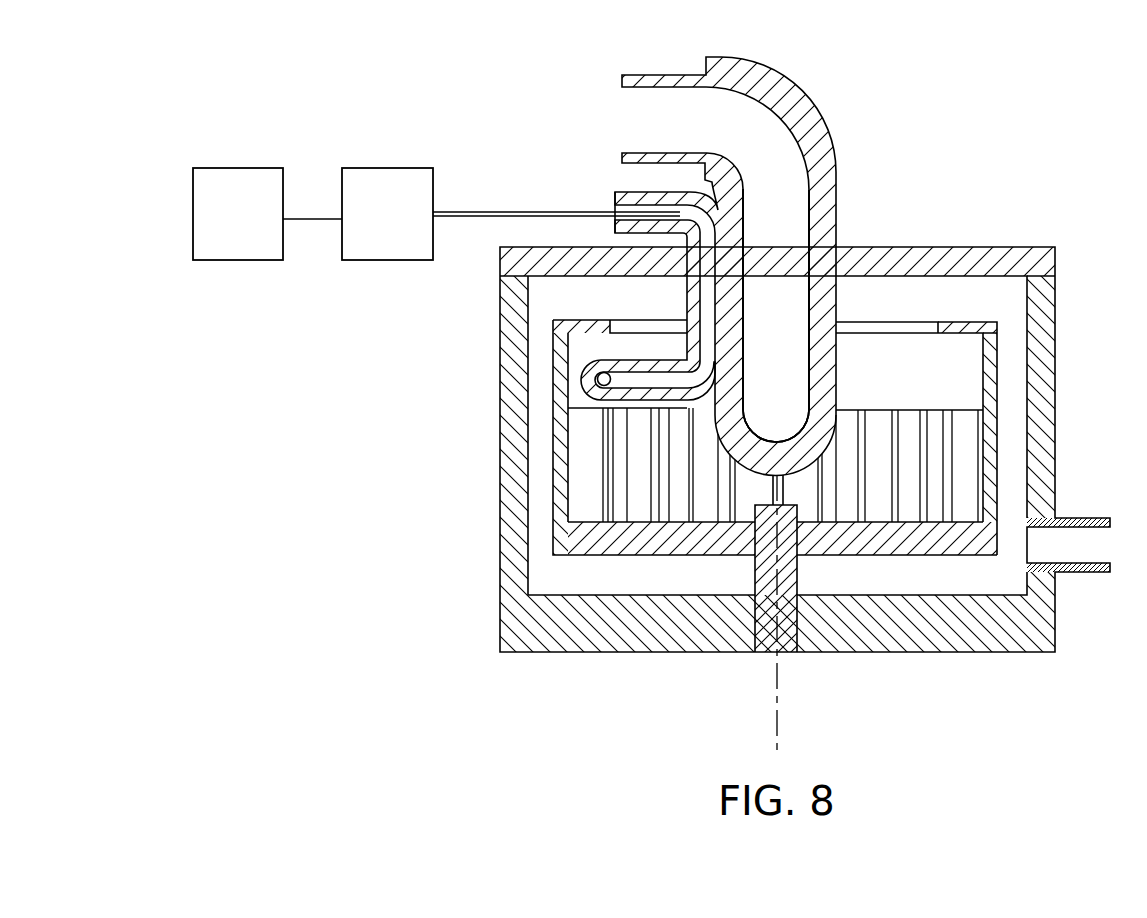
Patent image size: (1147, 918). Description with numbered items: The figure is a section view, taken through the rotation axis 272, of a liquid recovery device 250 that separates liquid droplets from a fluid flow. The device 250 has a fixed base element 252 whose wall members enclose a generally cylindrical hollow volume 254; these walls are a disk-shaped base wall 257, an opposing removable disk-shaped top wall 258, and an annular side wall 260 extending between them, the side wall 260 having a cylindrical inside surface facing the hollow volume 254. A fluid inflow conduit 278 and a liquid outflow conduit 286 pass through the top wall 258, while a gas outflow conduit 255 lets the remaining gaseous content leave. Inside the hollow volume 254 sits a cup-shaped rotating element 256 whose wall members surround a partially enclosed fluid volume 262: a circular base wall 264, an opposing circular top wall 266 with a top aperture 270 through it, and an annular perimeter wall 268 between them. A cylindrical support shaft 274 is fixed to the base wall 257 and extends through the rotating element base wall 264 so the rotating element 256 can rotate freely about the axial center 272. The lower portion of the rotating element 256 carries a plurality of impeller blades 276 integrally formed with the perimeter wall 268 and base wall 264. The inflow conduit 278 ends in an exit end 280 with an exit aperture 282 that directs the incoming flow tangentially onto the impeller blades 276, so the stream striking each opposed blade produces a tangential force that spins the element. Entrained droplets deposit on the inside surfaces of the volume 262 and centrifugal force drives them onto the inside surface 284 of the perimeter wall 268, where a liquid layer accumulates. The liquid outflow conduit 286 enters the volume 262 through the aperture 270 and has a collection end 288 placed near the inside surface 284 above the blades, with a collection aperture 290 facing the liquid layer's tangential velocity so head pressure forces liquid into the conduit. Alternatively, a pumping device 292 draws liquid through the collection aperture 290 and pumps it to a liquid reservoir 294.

The liquid recovery device 250 is at (1037, 49).
The fixed base element 252 is at (493, 646).
The hollow volume 254 is at (603, 589).
The gas outflow conduit 255 is at (1093, 517).
The rotating element 256 is at (550, 440).
The base wall 257 is at (604, 637).
The top wall 258 is at (932, 256).
The annular side wall 260 is at (1048, 328).
The partially enclosed fluid volume 262 is at (929, 387).
The base wall 264 is at (684, 548).
The top wall 266 is at (952, 322).
The annular perimeter wall 268 is at (563, 491).
The top aperture 270 is at (848, 323).
The rotation axis 272 is at (778, 737).
The support shaft 274 is at (768, 575).
The impeller blades 276 is at (875, 505).
The fluid inflow conduit 278 is at (693, 135).
The exit end 280 is at (764, 418).
The exit aperture 282 is at (776, 315).
The inside surface 284 is at (978, 365).
The liquid outflow conduit 286 is at (618, 212).
The collection end 288 is at (583, 378).
The collection aperture 290 is at (603, 372).
The pumping device 292 is at (408, 226).
The liquid reservoir 294 is at (259, 226).